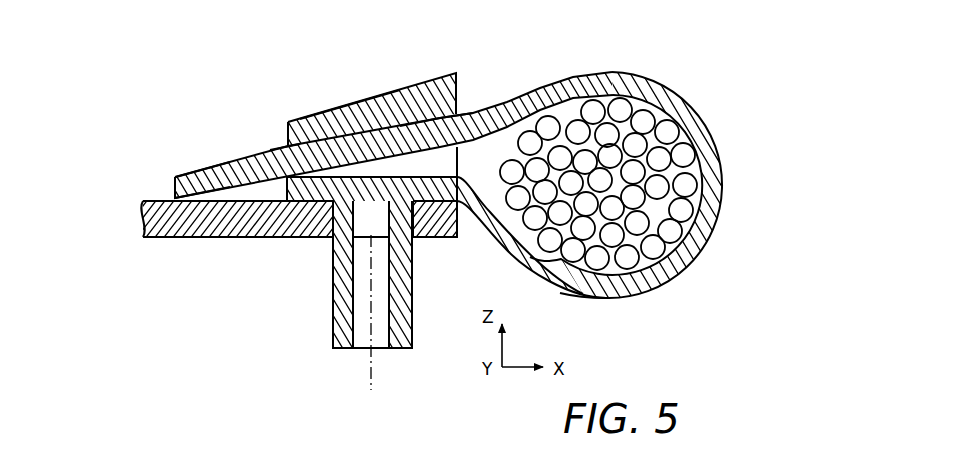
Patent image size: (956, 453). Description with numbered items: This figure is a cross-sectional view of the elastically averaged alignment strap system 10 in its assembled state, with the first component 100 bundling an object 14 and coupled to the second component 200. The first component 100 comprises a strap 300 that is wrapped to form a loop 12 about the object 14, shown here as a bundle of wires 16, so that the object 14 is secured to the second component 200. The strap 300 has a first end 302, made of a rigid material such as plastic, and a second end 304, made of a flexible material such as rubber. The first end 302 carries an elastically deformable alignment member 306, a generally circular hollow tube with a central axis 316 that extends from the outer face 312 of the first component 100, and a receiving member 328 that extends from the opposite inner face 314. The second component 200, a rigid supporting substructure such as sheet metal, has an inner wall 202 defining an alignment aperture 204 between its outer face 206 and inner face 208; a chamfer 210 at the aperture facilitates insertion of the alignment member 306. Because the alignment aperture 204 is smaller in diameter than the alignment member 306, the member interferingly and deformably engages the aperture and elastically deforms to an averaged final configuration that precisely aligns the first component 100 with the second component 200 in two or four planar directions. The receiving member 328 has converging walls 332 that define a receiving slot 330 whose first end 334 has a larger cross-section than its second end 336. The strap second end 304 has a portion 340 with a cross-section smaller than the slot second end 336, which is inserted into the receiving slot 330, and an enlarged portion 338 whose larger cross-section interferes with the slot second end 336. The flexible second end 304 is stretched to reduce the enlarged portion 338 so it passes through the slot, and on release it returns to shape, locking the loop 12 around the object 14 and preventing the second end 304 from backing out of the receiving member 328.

The elastically averaged alignment strap system 10 is at (168, 62).
The loop 12 is at (715, 127).
The object 14 is at (665, 248).
The wires 16 is at (665, 135).
The first component 100 is at (772, 148).
The second component 200 is at (137, 222).
The inner wall 202 is at (402, 240).
The alignment aperture 204 is at (368, 223).
The outer face 206 is at (165, 192).
The inner face 208 is at (175, 238).
The chamfer 210 is at (421, 205).
The strap 300 is at (628, 72).
The first end 302 is at (316, 193).
The second end 304 is at (202, 180).
The elastically deformable alignment member 306 is at (325, 343).
The outer face 312 is at (653, 293).
The inner face 314 is at (698, 190).
The central axis 316 is at (372, 370).
The receiving member 328 is at (403, 80).
The receiving slot 330 is at (463, 107).
The converging walls 332 is at (363, 108).
The first end 334 is at (442, 110).
The second end 336 is at (283, 150).
The enlarged portion 338 is at (288, 137).
The portion 340 is at (225, 177).